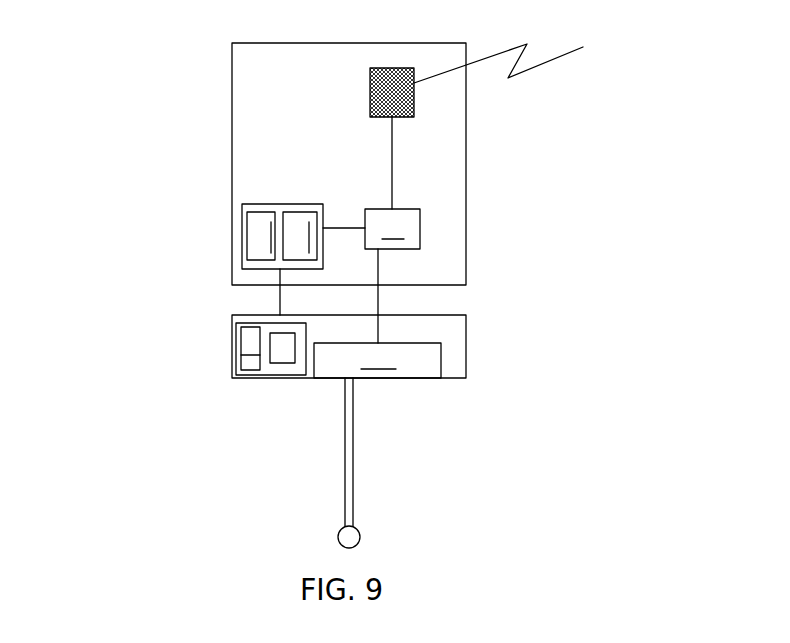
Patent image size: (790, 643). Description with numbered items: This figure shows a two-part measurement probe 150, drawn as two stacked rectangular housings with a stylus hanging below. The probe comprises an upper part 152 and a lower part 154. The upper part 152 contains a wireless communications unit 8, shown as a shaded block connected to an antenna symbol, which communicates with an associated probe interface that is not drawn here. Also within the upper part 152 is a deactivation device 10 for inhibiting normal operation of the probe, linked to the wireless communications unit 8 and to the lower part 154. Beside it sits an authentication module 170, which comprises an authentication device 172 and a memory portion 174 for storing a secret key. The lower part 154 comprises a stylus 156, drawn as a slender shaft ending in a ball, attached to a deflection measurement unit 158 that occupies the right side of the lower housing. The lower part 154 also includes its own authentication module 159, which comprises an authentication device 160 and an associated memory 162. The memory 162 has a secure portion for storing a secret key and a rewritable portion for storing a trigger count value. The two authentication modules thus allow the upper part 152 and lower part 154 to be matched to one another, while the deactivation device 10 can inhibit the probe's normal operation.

The two-part measurement probe 150 is at (112, 376).
The upper part 152 is at (467, 192).
The wireless communications unit 8 is at (370, 85).
The deactivation device 10 is at (371, 276).
The authentication module 170 is at (280, 203).
The authentication device 172 is at (300, 236).
The memory portion 174 is at (261, 236).
The lower part 154 is at (467, 348).
The deflection measurement unit 158 is at (377, 360).
The authentication module 159 is at (236, 340).
The authentication device 160 is at (283, 365).
The memory 162 is at (242, 378).
The stylus 156 is at (355, 452).